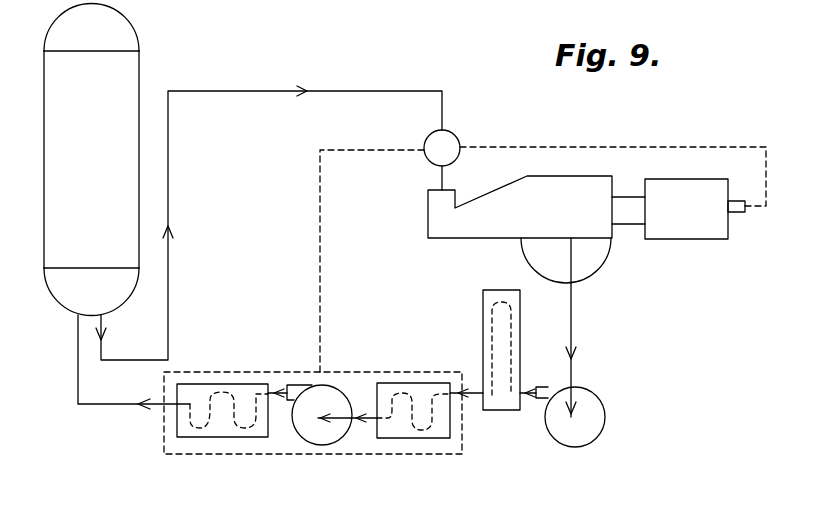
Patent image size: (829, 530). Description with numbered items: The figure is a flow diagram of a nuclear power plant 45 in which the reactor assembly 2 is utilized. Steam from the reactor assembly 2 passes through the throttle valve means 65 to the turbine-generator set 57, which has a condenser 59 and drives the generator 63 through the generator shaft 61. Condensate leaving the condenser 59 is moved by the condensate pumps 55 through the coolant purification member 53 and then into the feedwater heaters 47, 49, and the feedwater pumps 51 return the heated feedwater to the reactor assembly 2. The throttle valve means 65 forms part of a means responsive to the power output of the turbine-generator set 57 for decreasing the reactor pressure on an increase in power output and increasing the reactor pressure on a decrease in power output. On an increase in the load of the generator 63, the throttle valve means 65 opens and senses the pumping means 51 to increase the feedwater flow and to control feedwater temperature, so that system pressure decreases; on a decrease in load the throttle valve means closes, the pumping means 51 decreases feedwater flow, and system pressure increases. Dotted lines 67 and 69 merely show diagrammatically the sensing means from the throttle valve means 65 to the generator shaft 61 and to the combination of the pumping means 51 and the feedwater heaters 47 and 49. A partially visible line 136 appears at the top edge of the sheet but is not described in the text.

The reactor assembly 2 is at (140, 73).
The nuclear power plant 45 is at (345, 455).
The feedwater heater 47 is at (228, 394).
The feedwater heater 49 is at (422, 392).
The feedwater pumps 51 is at (366, 392).
The coolant purification member 53 is at (493, 290).
The condensate pumps 55 is at (597, 416).
The turbine-generator set 57 is at (582, 186).
The condenser 59 is at (592, 282).
The generator shaft 61 is at (735, 214).
The generator 63 is at (688, 188).
The throttle valve means 65 is at (455, 137).
The dotted line 67 is at (320, 250).
The dotted line 69 is at (568, 147).
The line 136 is at (309, 5).